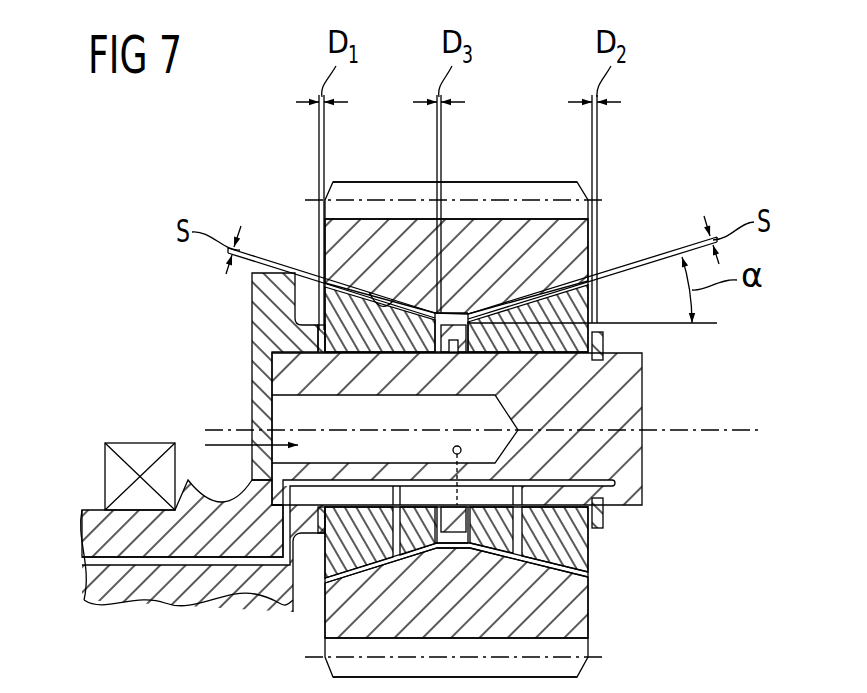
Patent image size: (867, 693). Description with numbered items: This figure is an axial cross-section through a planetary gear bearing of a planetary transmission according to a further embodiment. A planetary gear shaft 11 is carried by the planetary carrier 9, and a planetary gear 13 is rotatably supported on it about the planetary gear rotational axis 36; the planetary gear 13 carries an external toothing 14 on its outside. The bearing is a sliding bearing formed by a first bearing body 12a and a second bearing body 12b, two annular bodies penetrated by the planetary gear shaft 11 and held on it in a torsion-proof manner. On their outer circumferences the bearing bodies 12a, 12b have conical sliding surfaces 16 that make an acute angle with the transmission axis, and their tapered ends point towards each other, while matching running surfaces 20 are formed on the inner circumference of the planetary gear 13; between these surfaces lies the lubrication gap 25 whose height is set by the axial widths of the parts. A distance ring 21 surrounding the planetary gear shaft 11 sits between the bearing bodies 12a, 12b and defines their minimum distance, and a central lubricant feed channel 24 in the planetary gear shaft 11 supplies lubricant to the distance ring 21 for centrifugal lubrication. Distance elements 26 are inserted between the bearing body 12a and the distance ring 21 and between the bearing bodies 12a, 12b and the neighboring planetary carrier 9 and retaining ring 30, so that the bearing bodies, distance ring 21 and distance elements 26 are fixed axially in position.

The planetary carrier 9 is at (268, 288).
The planetary gear shaft 11 is at (620, 410).
The first bearing body 12a is at (350, 353).
The second bearing body 12b is at (572, 353).
The planetary gear 13 is at (553, 237).
The external toothing 14 is at (355, 190).
The conical sliding surface 16 is at (408, 307).
The running surface 20 is at (397, 297).
The distance ring 21 is at (462, 315).
The central lubricant feed channel 24 is at (290, 413).
The lubrication gap 25 is at (512, 297).
The distance element 26 is at (322, 337).
The retaining ring 30 is at (603, 513).
The planetary gear rotational axis 36 is at (756, 430).